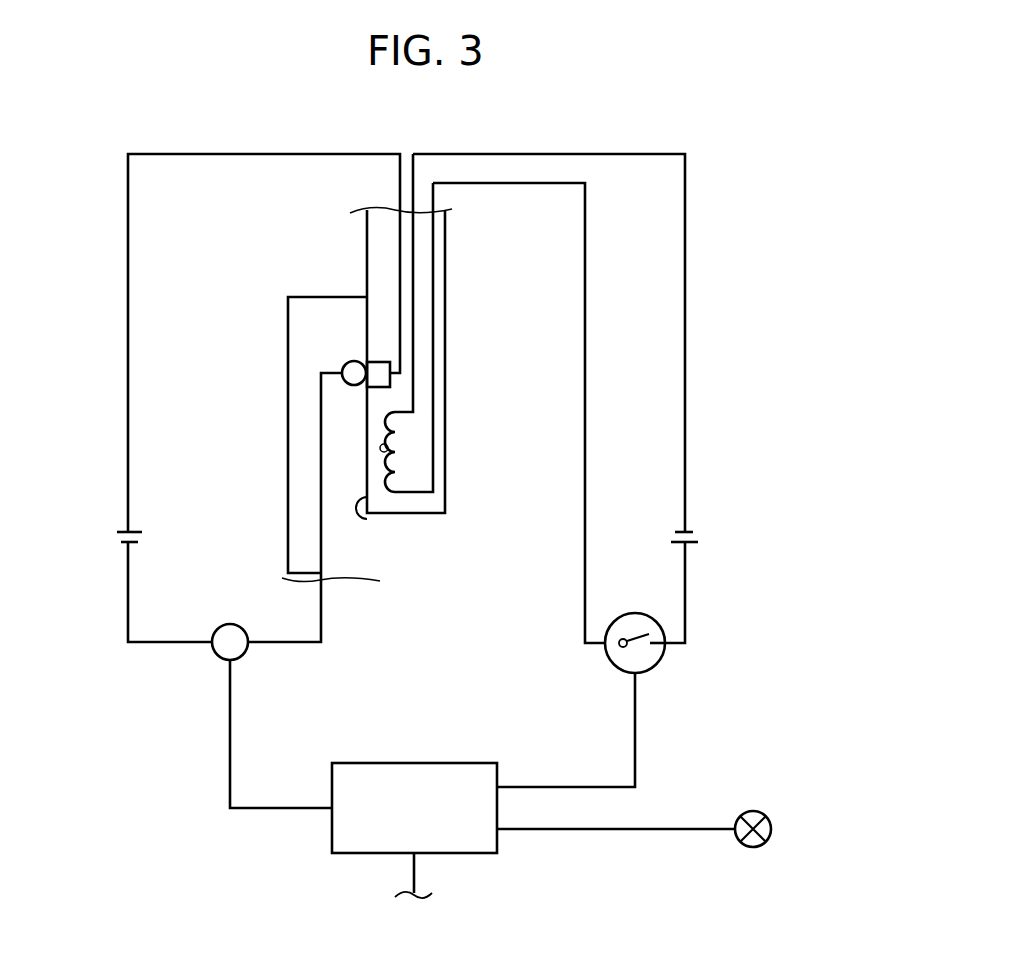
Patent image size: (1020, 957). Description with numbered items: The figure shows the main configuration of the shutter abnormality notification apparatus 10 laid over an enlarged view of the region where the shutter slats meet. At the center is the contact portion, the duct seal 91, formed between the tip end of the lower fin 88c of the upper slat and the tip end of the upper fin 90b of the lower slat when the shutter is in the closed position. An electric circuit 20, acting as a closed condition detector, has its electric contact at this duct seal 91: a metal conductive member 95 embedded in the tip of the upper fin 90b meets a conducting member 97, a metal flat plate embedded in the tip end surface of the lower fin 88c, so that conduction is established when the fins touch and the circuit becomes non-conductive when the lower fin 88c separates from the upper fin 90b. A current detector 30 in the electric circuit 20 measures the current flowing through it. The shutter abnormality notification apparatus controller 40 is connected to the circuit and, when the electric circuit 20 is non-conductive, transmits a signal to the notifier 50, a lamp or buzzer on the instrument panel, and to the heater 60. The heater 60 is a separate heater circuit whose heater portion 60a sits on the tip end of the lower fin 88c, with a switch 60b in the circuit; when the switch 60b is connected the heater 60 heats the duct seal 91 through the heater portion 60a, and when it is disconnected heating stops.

The shutter abnormality notification apparatus 10 is at (292, 841).
The electric circuit 20 is at (128, 330).
The current detector 30 is at (243, 655).
The shutter abnormality notification apparatus controller 40 is at (432, 763).
The notifier 50 is at (768, 841).
The heater 60 is at (685, 312).
The heater portion 60a is at (388, 452).
The switch 60b is at (657, 662).
The lower fin 88c is at (445, 310).
The upper fin 90b is at (288, 392).
The duct seal 91 is at (372, 520).
The conductive member 95 is at (352, 362).
The conducting member 97 is at (380, 360).